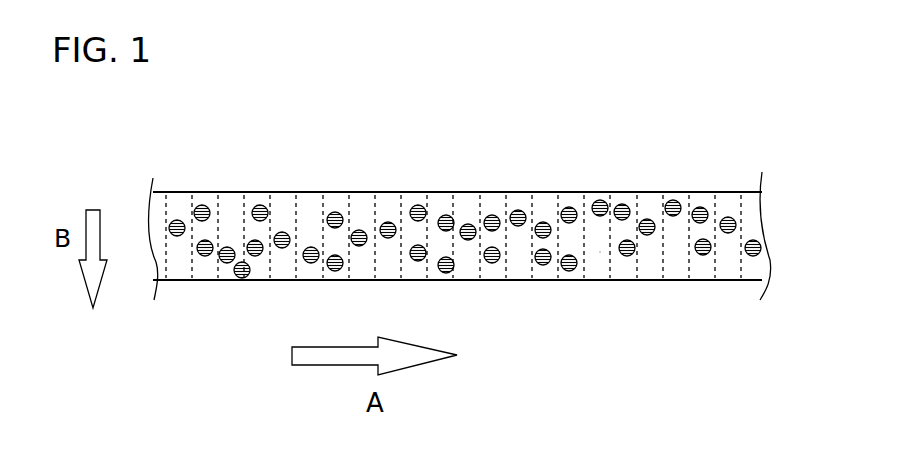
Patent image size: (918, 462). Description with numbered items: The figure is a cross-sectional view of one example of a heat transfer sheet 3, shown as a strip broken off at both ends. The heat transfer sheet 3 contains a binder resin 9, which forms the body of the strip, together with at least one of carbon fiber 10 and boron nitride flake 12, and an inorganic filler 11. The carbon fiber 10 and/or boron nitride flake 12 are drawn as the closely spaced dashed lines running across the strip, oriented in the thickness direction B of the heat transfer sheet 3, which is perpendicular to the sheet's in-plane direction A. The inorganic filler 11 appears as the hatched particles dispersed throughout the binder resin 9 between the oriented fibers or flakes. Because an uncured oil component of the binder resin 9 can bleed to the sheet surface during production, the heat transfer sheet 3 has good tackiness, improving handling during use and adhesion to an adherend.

The heat transfer sheet 3 is at (700, 183).
The binder resin 9 is at (752, 270).
The carbon fiber 10 is at (635, 309).
The inorganic filler 11 is at (419, 204).
The boron nitride flake 12 is at (617, 248).